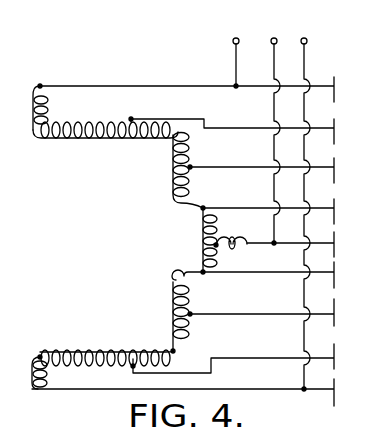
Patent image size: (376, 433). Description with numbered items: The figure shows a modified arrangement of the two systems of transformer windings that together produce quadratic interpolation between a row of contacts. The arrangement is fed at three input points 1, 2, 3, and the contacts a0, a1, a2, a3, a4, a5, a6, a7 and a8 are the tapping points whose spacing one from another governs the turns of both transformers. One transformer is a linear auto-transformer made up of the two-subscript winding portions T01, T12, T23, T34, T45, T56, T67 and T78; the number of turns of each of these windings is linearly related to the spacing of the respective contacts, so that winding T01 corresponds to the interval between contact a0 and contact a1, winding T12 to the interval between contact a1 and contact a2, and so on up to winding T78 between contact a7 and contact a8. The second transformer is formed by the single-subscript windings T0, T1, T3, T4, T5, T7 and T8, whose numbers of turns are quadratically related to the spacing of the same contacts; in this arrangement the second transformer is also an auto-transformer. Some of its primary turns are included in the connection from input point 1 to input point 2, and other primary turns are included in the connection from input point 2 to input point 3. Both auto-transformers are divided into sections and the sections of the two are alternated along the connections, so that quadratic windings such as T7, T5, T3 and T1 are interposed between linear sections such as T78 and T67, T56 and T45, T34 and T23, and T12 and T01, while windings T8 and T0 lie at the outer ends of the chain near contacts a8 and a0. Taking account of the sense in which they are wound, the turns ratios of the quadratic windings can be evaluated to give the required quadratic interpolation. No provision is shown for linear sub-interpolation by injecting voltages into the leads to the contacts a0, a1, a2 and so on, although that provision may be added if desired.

The input point 1 is at (236, 53).
The input point 2 is at (274, 131).
The input point 3 is at (304, 204).
The contact a0 is at (194, 392).
The contact a1 is at (244, 358).
The contact a2 is at (272, 312).
The contact a3 is at (279, 275).
The contact a4 is at (302, 244).
The contact a5 is at (279, 211).
The contact a6 is at (272, 170).
The contact a7 is at (243, 130).
The contact a8 is at (197, 89).
The winding of second transformer T0 is at (103, 349).
The winding of linear auto-transformer T01 is at (40, 378).
The winding of second transformer T1 is at (173, 351).
The winding of linear auto-transformer T12 is at (194, 333).
The winding of linear auto-transformer T23 is at (191, 302).
The winding of second transformer T3 is at (197, 272).
The winding of linear auto-transformer T34 is at (212, 265).
The winding of second transformer T4 is at (214, 245).
The winding of linear auto-transformer T45 is at (217, 221).
The winding of second transformer T5 is at (185, 205).
The winding of linear auto-transformer T56 is at (191, 191).
The winding of linear auto-transformer T67 is at (190, 148).
The winding of second transformer T7 is at (171, 136).
The winding of linear auto-transformer T78 is at (49, 110).
The winding of second transformer T8 is at (110, 137).